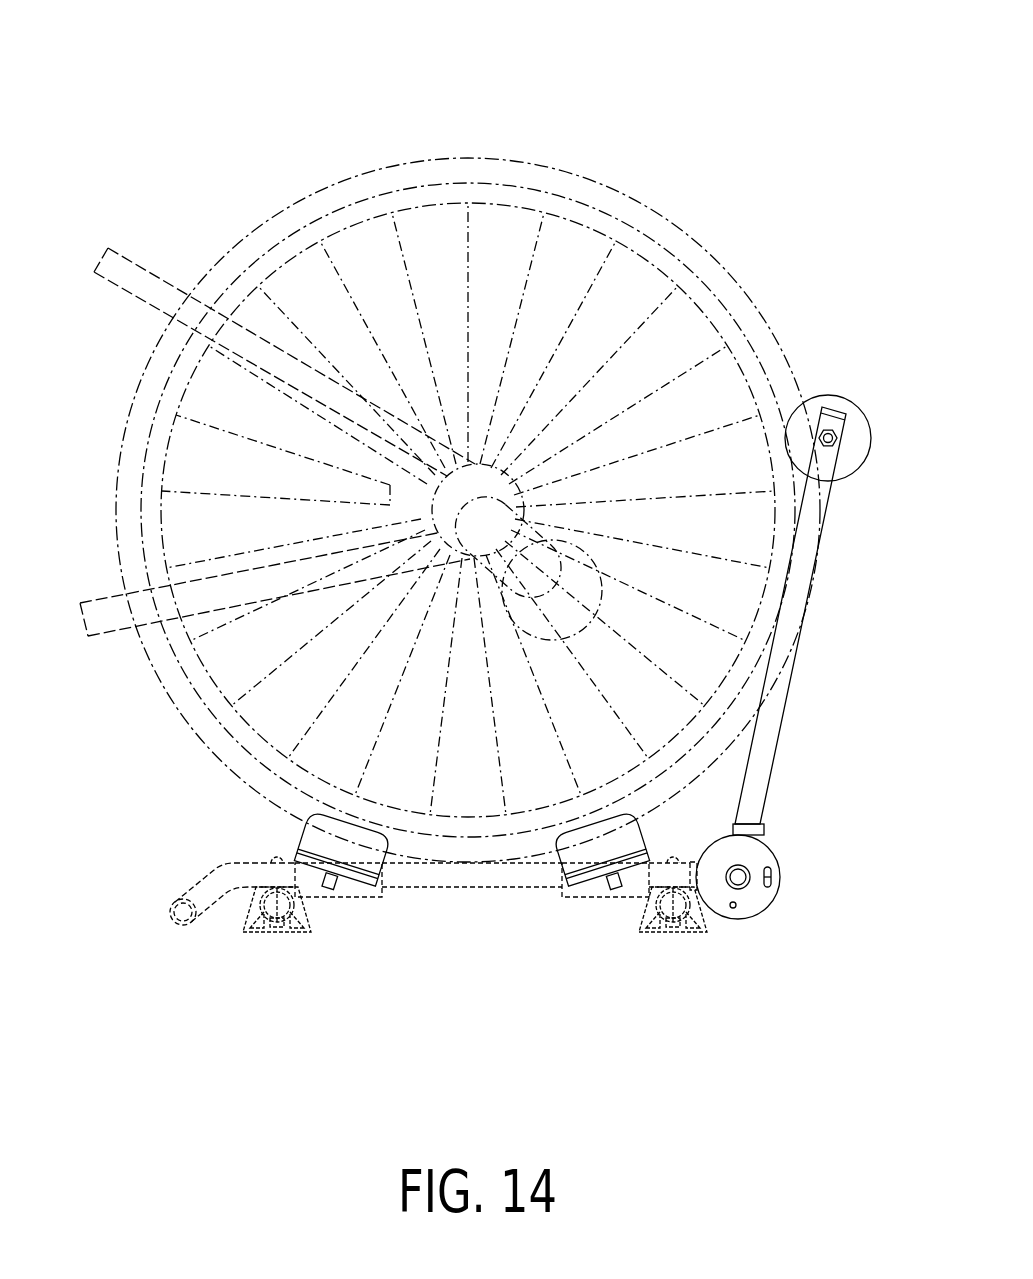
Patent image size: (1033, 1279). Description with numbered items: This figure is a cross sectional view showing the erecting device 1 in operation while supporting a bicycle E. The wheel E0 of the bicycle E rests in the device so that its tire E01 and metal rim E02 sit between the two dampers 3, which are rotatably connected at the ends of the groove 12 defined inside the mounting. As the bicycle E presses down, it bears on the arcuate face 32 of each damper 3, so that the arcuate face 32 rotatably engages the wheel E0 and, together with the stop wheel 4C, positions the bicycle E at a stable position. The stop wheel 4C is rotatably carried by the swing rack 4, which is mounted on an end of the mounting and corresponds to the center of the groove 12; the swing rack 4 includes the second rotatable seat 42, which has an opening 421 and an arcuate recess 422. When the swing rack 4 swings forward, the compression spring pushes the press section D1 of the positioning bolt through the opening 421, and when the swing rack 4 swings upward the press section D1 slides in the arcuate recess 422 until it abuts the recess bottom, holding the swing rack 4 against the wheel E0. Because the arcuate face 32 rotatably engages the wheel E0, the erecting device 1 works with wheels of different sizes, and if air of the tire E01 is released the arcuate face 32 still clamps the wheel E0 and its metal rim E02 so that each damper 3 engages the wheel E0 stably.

The wheel E0 is at (468, 433).
The tire E01 is at (530, 178).
The metal rim E02 is at (558, 78).
The bicycle E is at (145, 250).
The stop wheel 4C is at (805, 402).
The swing rack 4 is at (772, 762).
The second rotatable seat 42 is at (794, 893).
The press section D1 is at (773, 877).
The arcuate recess 422 is at (773, 890).
The opening 421 is at (736, 909).
The erecting device 1 is at (206, 876).
The groove 12 is at (460, 877).
The damper 3 is at (310, 868).
The arcuate face 32 is at (312, 840).